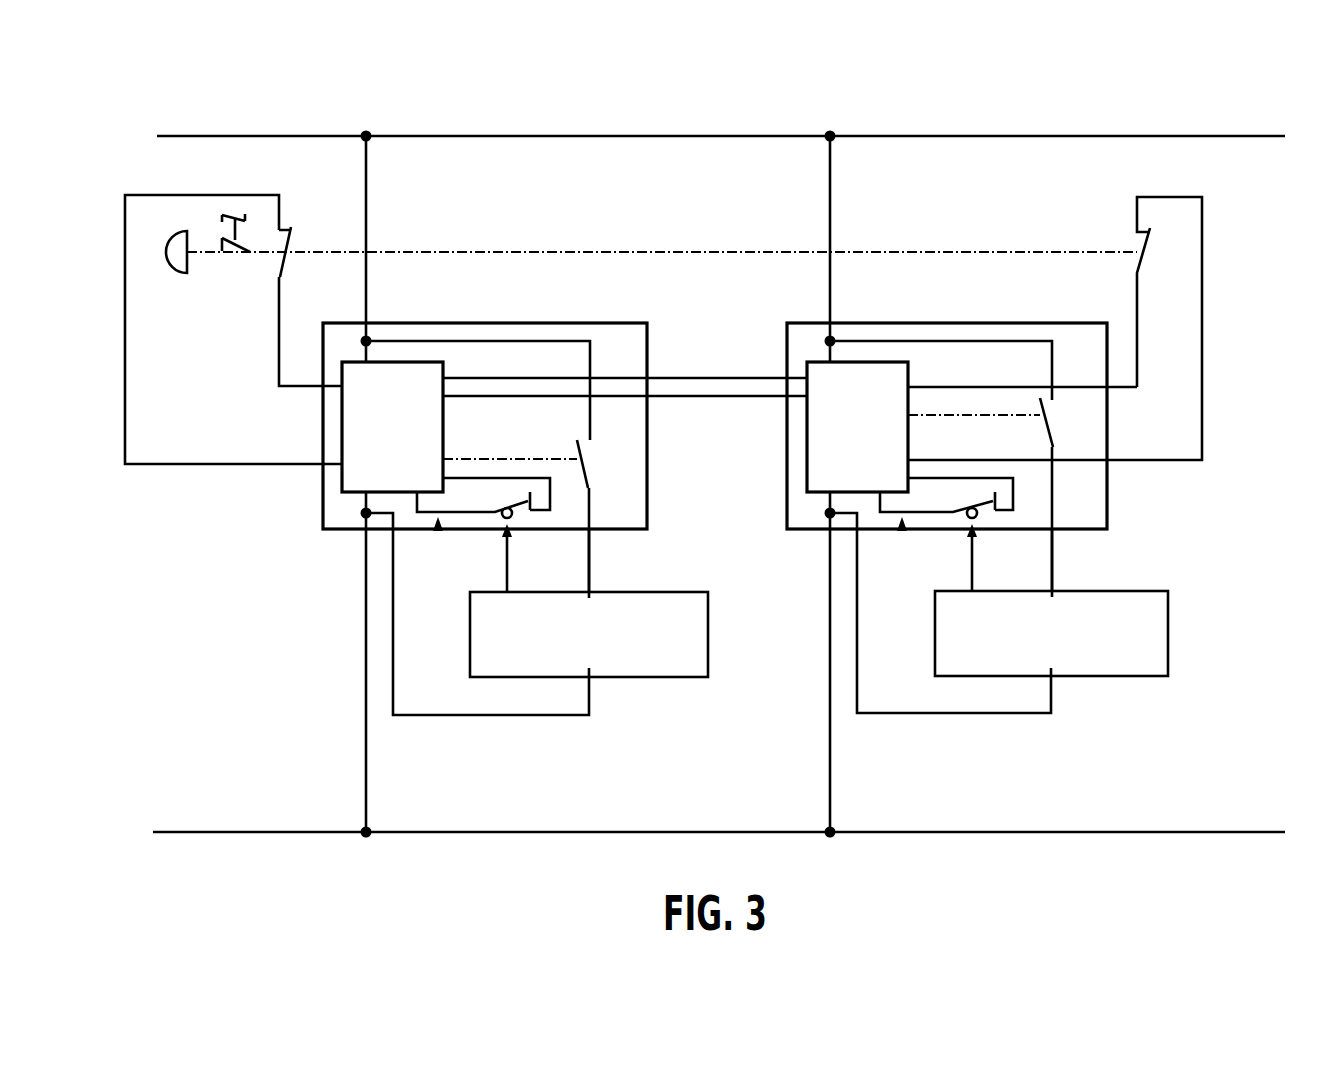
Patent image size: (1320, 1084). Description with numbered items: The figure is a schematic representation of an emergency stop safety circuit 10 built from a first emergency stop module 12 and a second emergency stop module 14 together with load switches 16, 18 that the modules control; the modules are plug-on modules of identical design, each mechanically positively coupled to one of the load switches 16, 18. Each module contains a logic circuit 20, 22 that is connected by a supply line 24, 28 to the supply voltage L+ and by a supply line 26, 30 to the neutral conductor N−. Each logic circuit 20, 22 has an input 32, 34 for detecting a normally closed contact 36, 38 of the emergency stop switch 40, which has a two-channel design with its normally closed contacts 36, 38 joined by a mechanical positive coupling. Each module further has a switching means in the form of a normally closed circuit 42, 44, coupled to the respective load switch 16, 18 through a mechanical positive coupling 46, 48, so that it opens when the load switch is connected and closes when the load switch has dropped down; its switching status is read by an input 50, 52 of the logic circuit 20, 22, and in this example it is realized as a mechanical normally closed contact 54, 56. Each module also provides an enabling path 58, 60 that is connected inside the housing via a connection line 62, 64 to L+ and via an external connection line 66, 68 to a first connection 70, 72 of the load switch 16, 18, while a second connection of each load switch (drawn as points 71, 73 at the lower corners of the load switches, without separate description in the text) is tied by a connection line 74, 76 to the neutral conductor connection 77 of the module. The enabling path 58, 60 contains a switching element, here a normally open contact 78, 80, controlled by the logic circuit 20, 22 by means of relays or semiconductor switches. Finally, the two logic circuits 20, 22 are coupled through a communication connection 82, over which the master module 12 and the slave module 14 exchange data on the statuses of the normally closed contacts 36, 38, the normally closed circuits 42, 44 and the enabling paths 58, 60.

The emergency stop safety circuit 10 is at (718, 110).
The first emergency stop module 12 is at (478, 357).
The second emergency stop module 14 is at (940, 355).
The load switch 16 is at (688, 655).
The load switch 18 is at (1142, 655).
The logic circuit 20 is at (375, 428).
The logic circuit 22 is at (842, 428).
The supply line 24 is at (368, 216).
The supply line 26 is at (368, 768).
The supply line 28 is at (832, 207).
The supply line 30 is at (832, 768).
The input 32 is at (283, 445).
The input 34 is at (1120, 438).
The normally closed contact 36 is at (290, 242).
The normally closed contact 38 is at (1140, 242).
The emergency stop switch 40 is at (200, 263).
The normally closed circuit 42 is at (433, 533).
The normally closed circuit 44 is at (900, 533).
The mechanical positive coupling 46 is at (505, 545).
The mechanical positive coupling 48 is at (972, 547).
The input 50 is at (405, 482).
The input 52 is at (870, 482).
The mechanical normally closed contact 54 is at (517, 522).
The mechanical normally closed contact 56 is at (985, 522).
The enabling path 58 is at (592, 357).
The enabling path 60 is at (1053, 357).
The connection line 62 is at (542, 357).
The connection line 64 is at (1003, 340).
The external connection line 66 is at (598, 554).
The external connection line 68 is at (1057, 553).
The first connection 70 is at (589, 598).
The first actuator output 71 is at (590, 668).
The first connection 72 is at (1050, 597).
The second actuator output 73 is at (1050, 677).
The connection line 74 is at (543, 715).
The connection line 76 is at (1008, 715).
The neutral conductor connection 77 is at (287, 830).
The normally open contact 78 is at (590, 463).
The normally open contact 80 is at (1045, 420).
The communication connection 82 is at (715, 388).